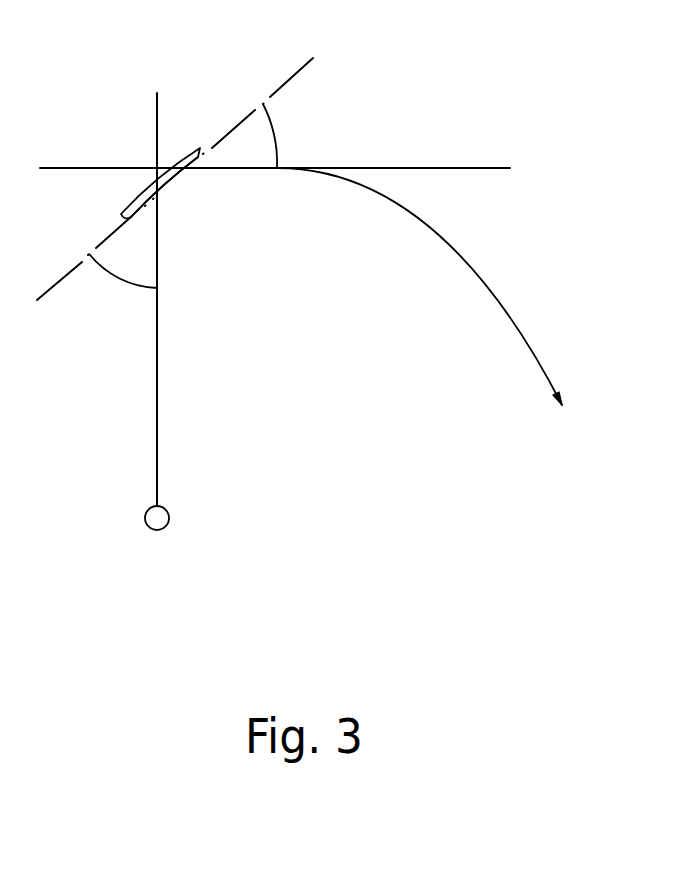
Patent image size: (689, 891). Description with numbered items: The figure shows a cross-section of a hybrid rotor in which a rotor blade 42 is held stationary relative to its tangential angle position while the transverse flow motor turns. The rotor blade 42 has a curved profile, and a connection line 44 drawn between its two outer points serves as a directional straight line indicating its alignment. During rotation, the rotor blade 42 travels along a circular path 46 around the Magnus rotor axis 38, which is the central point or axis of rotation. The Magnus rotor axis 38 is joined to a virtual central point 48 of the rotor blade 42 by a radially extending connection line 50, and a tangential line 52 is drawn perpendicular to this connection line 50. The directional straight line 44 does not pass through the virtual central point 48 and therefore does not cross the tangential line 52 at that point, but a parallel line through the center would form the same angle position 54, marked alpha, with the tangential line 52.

The Magnus rotor axis 38 is at (170, 516).
The rotor blade 42 is at (175, 157).
The connection line 44 is at (63, 285).
The circular path 46 is at (493, 268).
The virtual central point 48 is at (140, 195).
The connection line 50 is at (158, 333).
The tangential line 52 is at (480, 167).
The angle position 54 is at (282, 128).